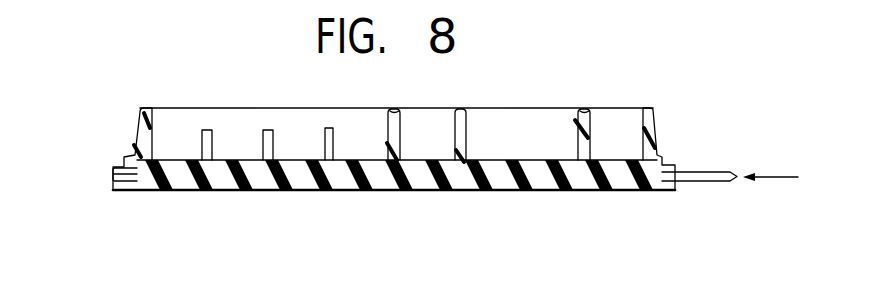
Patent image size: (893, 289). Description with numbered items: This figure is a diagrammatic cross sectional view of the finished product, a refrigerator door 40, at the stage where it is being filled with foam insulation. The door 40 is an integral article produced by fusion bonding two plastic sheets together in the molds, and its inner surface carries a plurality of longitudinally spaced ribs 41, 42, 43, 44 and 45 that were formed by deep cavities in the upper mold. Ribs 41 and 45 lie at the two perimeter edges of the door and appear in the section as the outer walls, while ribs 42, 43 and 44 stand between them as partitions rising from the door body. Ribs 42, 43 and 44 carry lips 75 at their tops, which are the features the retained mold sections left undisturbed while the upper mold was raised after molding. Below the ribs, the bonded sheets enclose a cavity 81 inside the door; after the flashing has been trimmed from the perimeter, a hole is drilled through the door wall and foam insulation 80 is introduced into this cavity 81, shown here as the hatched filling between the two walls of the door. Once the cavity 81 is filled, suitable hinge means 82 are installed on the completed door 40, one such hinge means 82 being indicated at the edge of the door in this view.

The refrigerator door 40 is at (547, 196).
The rib 41 is at (652, 117).
The rib 42 is at (580, 133).
The rib 43 is at (465, 133).
The rib 44 is at (390, 128).
The rib 45 is at (143, 127).
The lip 75 is at (403, 117).
The foam insulation 80 is at (460, 182).
The cavity 81 is at (340, 187).
The hinge means 82 is at (113, 176).